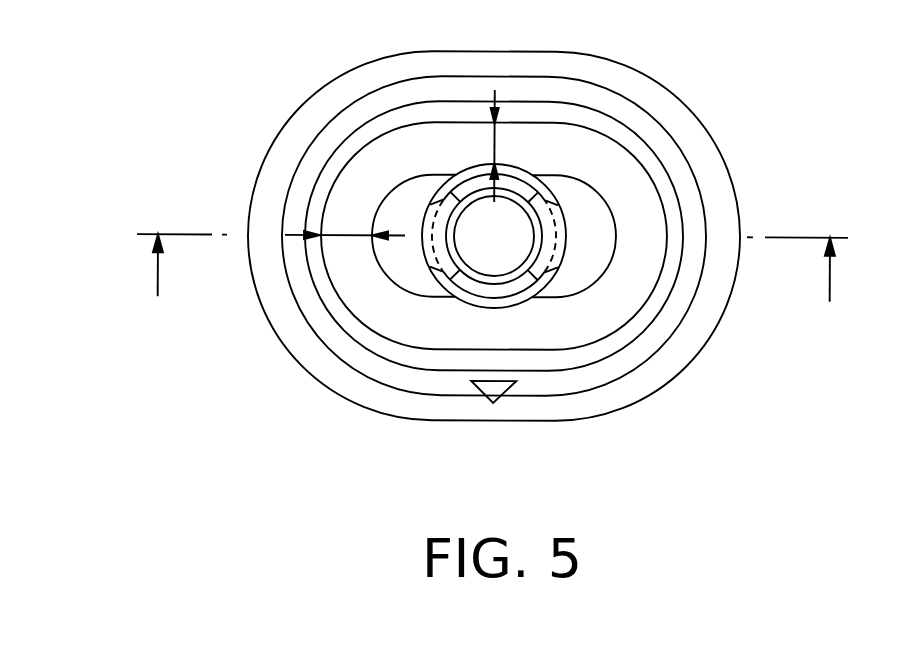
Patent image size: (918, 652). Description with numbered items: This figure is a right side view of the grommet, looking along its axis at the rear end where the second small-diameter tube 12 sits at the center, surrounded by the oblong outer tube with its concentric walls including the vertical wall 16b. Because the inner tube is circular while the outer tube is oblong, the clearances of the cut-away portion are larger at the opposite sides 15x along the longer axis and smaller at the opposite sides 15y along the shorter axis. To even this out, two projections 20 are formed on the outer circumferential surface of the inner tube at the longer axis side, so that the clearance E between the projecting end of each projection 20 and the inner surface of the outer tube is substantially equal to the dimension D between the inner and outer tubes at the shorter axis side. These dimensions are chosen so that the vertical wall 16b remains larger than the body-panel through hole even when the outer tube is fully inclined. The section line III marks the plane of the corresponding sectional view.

The second small-diameter tube 12 is at (467, 300).
The opposite sides along the longer axis 15x is at (347, 260).
The opposite sides along the shorter axis 15y is at (537, 148).
The vertical wall 16b is at (670, 314).
The projections 20 is at (410, 273).
The dimension D is at (493, 143).
The clearance E is at (347, 235).
The section line III- III is at (138, 310).